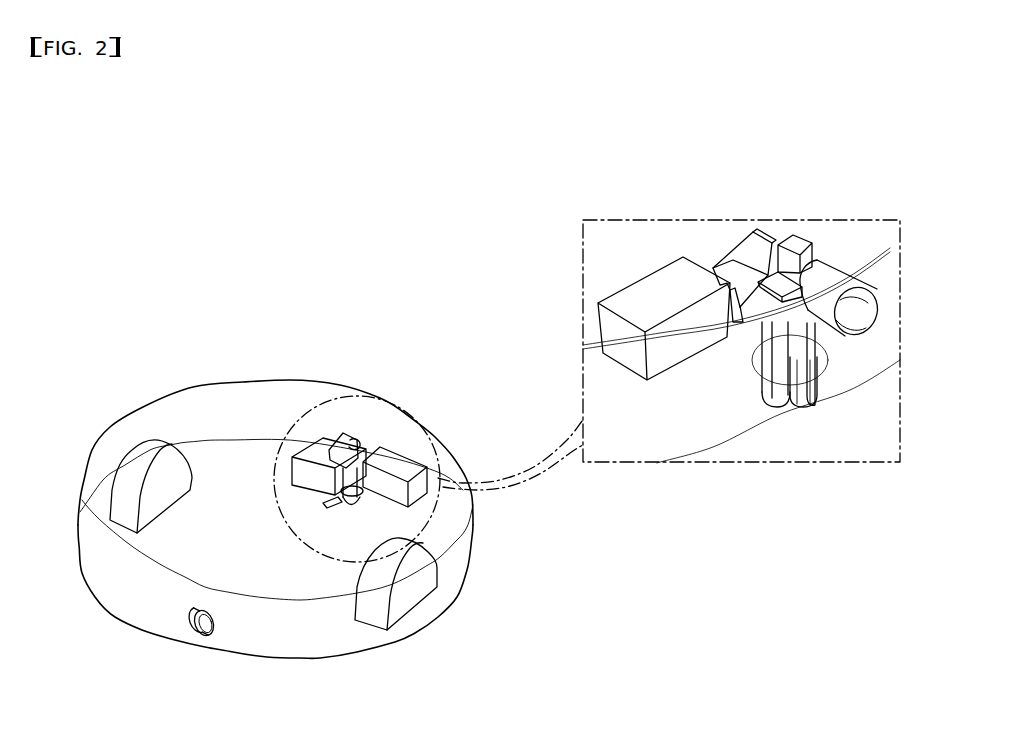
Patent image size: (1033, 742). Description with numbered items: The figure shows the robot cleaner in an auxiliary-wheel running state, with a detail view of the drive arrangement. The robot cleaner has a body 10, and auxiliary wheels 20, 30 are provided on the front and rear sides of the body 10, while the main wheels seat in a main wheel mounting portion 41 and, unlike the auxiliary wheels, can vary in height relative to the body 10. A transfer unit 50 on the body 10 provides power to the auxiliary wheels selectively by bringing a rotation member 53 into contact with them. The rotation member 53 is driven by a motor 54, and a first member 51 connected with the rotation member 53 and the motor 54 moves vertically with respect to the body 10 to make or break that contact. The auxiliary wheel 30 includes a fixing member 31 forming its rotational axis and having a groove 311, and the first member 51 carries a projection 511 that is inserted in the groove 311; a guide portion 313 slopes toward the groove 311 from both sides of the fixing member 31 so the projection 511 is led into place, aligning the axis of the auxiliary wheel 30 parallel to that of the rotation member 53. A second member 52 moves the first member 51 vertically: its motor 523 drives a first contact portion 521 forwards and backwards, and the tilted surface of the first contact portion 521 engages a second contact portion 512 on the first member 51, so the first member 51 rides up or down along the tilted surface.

The body 10 is at (193, 425).
The auxiliary wheel 20 is at (185, 618).
The auxiliary wheel 30 is at (797, 395).
The fixing member 31 is at (767, 345).
The groove 311 is at (788, 342).
The guide portion 313 is at (833, 317).
The main wheel mounting portion 41 is at (145, 453).
The transfer unit 50 is at (322, 382).
The first member 51 is at (280, 463).
The projection 511 is at (838, 308).
The second contact portion 512 is at (757, 248).
The second member 52 is at (388, 437).
The first contact portion 521 is at (733, 265).
The motor 523 is at (670, 283).
The rotation member 53 is at (740, 345).
The motor 54 is at (831, 268).